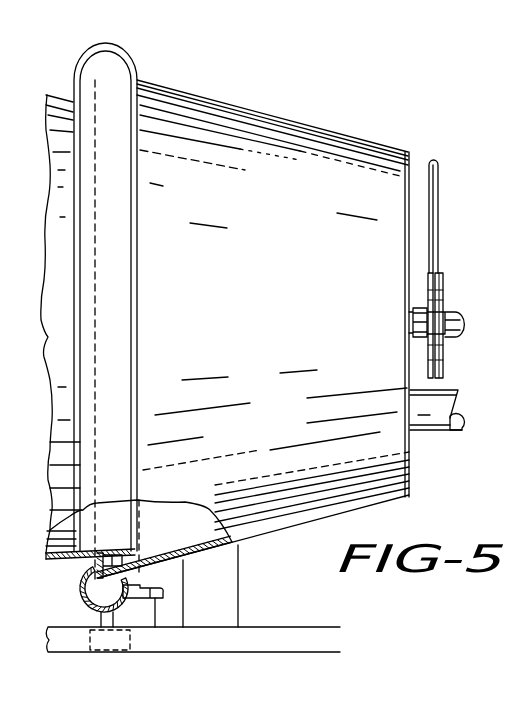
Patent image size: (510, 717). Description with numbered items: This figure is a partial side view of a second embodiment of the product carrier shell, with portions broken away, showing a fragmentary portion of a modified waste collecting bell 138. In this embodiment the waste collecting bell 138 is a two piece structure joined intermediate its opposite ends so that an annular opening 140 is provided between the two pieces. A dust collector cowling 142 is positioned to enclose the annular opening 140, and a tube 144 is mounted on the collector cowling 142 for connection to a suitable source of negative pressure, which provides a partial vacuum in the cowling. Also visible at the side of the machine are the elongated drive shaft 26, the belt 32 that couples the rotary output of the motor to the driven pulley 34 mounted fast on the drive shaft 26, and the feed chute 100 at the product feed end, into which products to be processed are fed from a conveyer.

The drive shaft 26 is at (462, 322).
The belt 32 is at (438, 182).
The driven pulley 34 is at (447, 281).
The feed chute 100 is at (435, 435).
The waste collecting bell 138 is at (283, 116).
The annular opening 140 is at (82, 572).
The dust collector cowling 142 is at (134, 52).
The tube 144 is at (155, 627).